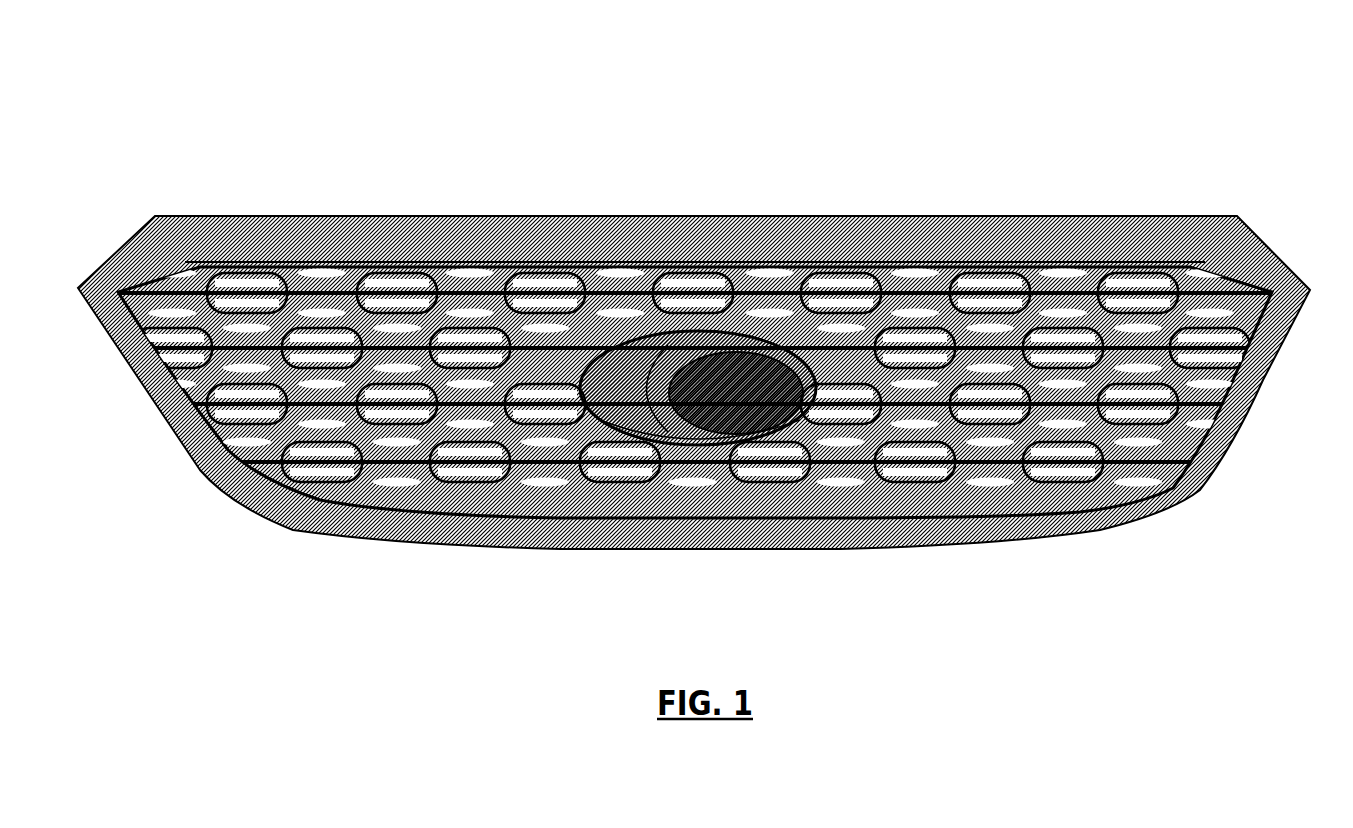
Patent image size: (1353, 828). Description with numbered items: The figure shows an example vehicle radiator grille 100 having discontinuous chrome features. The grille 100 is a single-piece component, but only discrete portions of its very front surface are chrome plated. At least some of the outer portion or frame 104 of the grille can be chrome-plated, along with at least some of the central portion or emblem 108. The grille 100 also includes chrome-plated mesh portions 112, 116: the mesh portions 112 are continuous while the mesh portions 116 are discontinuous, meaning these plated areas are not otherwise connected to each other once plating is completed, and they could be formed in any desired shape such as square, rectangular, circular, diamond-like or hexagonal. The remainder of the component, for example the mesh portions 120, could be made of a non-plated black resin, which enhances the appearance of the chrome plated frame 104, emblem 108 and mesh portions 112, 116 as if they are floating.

The vehicle radiator grille 100 is at (688, 334).
The frame 104 is at (123, 253).
The emblem 108 is at (635, 395).
The mesh portions 112 is at (617, 292).
The mesh portions 116 is at (542, 303).
The mesh portions 120 is at (797, 298).